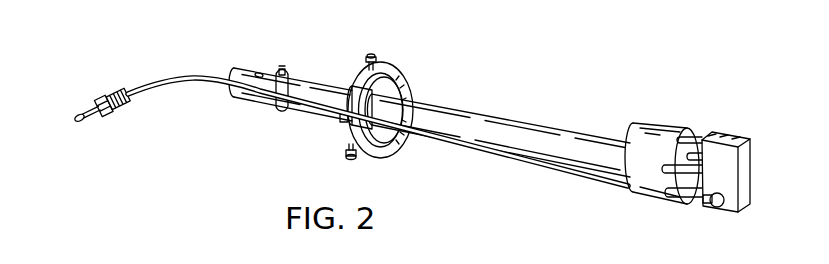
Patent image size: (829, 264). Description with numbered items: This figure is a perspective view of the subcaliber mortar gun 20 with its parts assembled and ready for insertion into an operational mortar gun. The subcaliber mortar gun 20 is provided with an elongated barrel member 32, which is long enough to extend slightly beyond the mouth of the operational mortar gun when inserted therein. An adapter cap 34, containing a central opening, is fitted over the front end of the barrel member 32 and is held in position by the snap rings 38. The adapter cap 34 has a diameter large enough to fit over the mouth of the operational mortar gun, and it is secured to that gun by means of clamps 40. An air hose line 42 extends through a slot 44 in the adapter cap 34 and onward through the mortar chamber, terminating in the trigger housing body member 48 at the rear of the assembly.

The subcaliber mortar gun 20 is at (410, 123).
The elongated barrel member 32 is at (492, 118).
The adapter cap 34 is at (410, 78).
The snap rings 38 is at (287, 68).
The clamps 40 is at (372, 56).
The air hose line 42 is at (184, 90).
The slot 44 is at (345, 121).
The trigger housing body member 48 is at (666, 126).